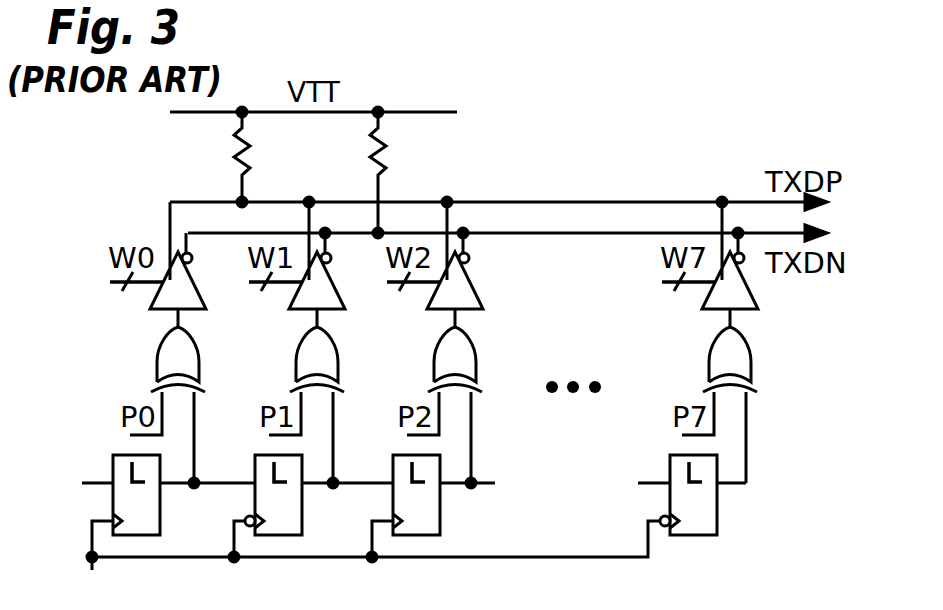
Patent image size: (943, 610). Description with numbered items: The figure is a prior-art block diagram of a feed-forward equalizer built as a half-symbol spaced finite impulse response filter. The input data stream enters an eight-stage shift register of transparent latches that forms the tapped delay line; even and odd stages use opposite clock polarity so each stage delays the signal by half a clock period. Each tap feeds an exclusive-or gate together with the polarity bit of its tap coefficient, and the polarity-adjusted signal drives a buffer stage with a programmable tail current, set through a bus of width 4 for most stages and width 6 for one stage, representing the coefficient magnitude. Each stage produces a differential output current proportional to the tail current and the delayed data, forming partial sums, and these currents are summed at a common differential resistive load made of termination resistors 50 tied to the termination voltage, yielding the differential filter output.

The termination resistor (50 ohm) 50 is at (330, 172).
The 4-bit driver width bus 4 is at (413, 297).
The 6-bit driver width bus 6 is at (414, 297).